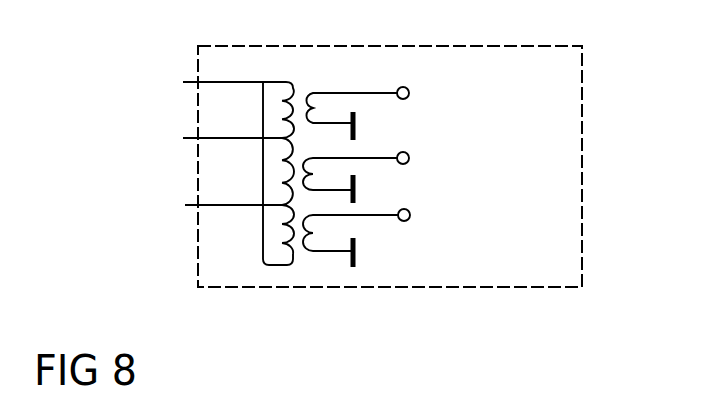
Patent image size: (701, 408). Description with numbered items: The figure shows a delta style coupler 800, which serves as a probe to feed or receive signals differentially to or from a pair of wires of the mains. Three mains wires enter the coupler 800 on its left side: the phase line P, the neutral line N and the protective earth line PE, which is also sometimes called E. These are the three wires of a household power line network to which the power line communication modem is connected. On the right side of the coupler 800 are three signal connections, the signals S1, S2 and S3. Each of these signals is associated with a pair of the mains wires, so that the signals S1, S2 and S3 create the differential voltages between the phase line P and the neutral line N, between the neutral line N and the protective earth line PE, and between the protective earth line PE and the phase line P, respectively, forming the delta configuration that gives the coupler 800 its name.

The delta style coupler 800 is at (449, 166).
The phase line P is at (230, 72).
The neutral line N is at (228, 143).
The protective earth line PE is at (226, 213).
The signal S1 is at (358, 107).
The signal S2 is at (356, 171).
The signal S3 is at (356, 238).